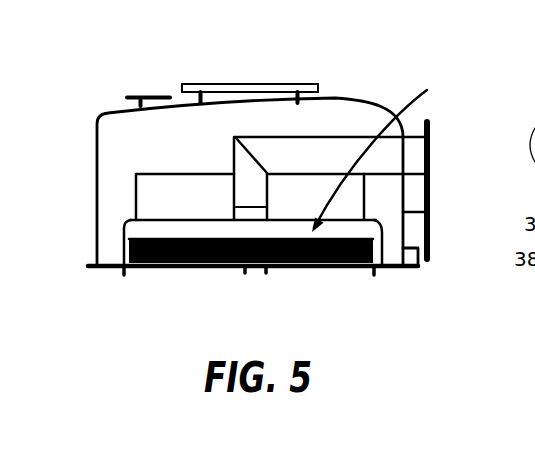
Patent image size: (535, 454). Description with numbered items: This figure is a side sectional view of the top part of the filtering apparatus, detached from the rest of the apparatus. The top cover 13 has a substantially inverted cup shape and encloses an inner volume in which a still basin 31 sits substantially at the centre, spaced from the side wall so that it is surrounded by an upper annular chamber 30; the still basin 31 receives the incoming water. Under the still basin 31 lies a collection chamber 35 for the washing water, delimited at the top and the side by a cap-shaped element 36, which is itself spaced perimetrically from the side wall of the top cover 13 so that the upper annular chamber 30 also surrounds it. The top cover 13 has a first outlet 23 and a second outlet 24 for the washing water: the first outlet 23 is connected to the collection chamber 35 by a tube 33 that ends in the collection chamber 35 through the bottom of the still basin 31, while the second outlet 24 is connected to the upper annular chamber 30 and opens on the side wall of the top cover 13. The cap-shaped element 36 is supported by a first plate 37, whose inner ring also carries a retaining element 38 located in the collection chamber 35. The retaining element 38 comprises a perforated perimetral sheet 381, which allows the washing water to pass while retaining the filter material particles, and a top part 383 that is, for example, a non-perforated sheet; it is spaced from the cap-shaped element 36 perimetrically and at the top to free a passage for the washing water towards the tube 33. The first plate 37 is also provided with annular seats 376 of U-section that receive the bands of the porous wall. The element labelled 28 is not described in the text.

The top cover 13 is at (84, 163).
The top plate 28 is at (230, 85).
The still basin 31 is at (163, 183).
The tube 33 is at (287, 147).
The retaining element 38 is at (382, 151).
The first outlet 23 is at (430, 147).
The second outlet 24 is at (425, 233).
The collection chamber 35 is at (350, 230).
The upper annular chamber 30 is at (393, 230).
The cap-shaped element 36 is at (114, 224).
The perforated perimetral sheet 381 is at (243, 257).
The top part 383 is at (200, 238).
The first plate 37 is at (103, 269).
The annular seats 376 is at (245, 269).